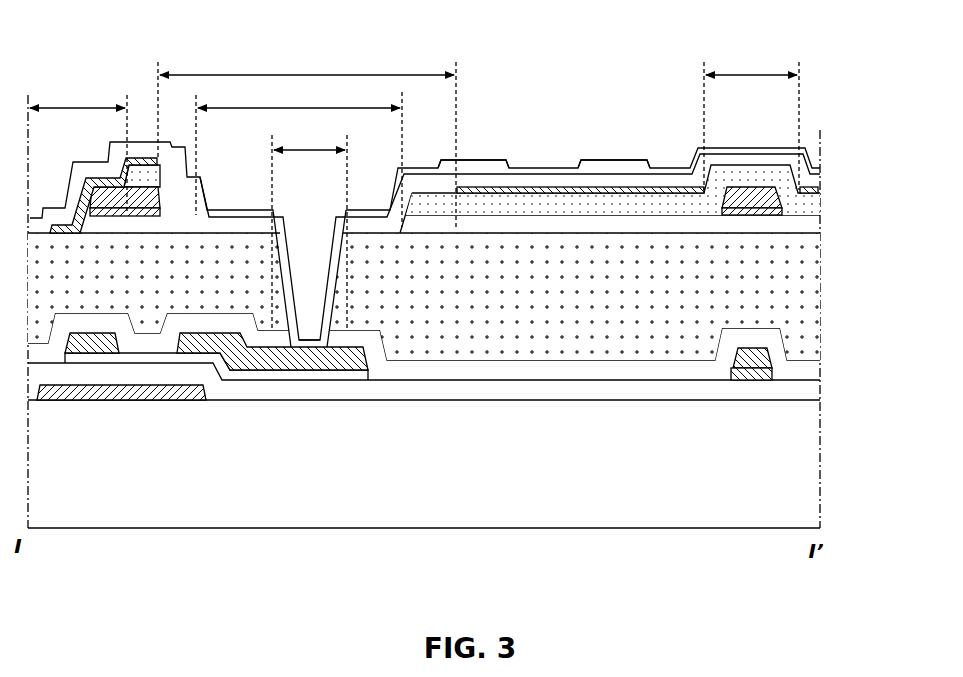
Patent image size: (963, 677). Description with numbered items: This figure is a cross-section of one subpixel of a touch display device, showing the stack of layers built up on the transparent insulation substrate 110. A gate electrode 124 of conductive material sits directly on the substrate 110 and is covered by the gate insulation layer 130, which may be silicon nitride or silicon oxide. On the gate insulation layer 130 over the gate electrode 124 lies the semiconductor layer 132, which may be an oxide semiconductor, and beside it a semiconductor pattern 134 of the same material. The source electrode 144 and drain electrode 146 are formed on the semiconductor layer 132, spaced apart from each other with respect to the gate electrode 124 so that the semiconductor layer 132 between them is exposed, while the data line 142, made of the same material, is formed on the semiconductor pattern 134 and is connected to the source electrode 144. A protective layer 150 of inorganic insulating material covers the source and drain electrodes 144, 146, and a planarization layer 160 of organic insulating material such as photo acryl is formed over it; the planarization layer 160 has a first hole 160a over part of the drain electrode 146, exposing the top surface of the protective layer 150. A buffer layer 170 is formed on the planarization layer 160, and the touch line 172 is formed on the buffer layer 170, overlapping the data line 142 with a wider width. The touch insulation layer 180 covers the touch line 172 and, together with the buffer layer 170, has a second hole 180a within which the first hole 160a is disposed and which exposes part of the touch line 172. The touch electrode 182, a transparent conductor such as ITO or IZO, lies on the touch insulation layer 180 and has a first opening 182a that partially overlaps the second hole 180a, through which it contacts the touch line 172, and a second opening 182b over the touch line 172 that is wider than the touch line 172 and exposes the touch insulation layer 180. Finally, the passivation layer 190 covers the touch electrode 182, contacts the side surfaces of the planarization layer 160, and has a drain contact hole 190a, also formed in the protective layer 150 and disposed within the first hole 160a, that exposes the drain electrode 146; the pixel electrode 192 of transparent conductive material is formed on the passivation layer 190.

The transparent insulation substrate 110 is at (800, 462).
The gate electrode 124 is at (143, 395).
The gate insulation layer 130 is at (800, 393).
The semiconductor layer 132 is at (232, 368).
The semiconductor pattern 134 is at (737, 380).
The data line 142 is at (748, 368).
The source electrode 144 is at (88, 352).
The drain electrode 146 is at (318, 362).
The protective layer 150 is at (800, 370).
The planarization layer 160 is at (800, 290).
The first hole 160a is at (309, 229).
The buffer layer 170 is at (808, 228).
The touch line 172 is at (757, 188).
The touch insulation layer 180 is at (808, 203).
The second hole 180a is at (216, 156).
The touch electrode 182 is at (142, 158).
The first opening 182a is at (307, 142).
The second opening 182b is at (751, 122).
The passivation layer 190 is at (808, 178).
The drain contact hole 190a is at (308, 284).
The pixel electrode 192 is at (486, 160).